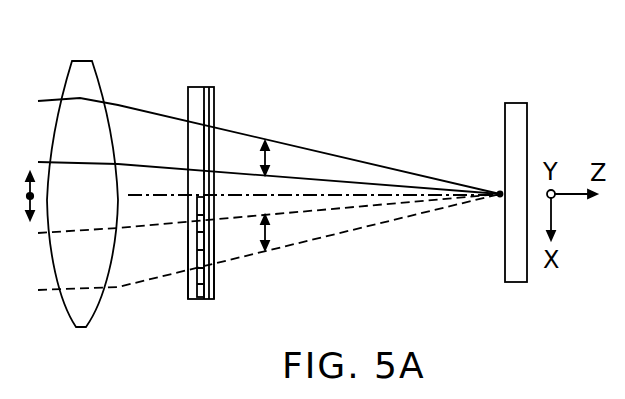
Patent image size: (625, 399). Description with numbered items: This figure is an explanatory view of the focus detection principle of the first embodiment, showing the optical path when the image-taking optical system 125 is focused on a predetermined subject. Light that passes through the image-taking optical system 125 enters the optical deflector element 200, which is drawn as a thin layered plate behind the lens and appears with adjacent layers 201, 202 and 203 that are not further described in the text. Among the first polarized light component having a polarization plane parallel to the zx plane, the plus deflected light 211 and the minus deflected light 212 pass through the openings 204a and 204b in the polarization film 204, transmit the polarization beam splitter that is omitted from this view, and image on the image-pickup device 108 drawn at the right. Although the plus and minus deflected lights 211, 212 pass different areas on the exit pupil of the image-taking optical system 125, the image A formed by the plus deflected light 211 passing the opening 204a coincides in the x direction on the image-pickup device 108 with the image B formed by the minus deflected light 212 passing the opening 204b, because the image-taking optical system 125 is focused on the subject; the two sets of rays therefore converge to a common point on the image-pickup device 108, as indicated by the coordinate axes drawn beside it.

The image-pickup device 108 is at (516, 282).
The image-taking optical system 125 is at (80, 327).
The optical deflector element 200 is at (233, 203).
The first plate 201 is at (193, 101).
The second plate 202 is at (188, 292).
The third plate 203 is at (215, 278).
The polarization film 204 is at (207, 87).
The opening 204a is at (214, 244).
The opening 204b is at (208, 143).
The plus deflected light 211 is at (402, 218).
The minus deflected light 212 is at (355, 157).